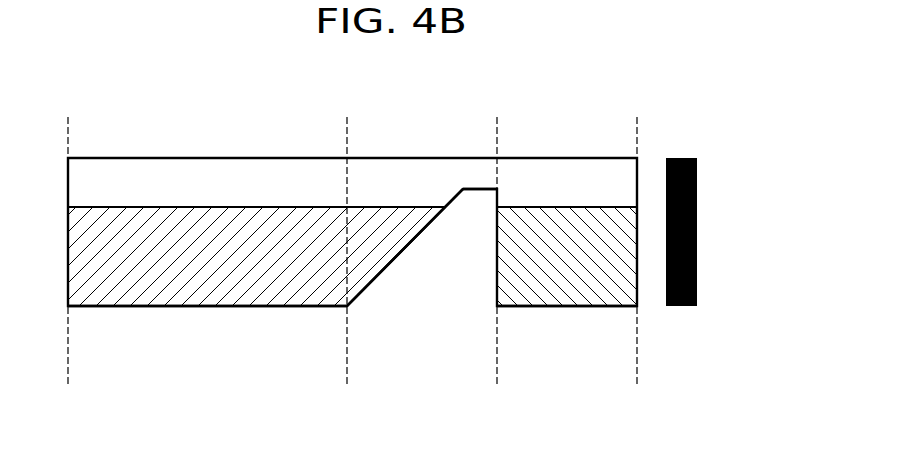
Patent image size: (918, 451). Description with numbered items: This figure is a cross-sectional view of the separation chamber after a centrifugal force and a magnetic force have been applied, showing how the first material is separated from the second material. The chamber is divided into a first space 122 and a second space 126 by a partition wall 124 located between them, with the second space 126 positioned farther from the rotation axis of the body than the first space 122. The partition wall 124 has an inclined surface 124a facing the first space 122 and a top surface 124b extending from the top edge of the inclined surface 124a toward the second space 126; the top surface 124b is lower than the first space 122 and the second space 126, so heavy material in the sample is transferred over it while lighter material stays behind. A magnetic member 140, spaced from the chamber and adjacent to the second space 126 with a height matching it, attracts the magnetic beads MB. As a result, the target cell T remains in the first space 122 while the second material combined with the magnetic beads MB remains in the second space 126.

The target cell T is at (229, 222).
The magnetic beads MB is at (570, 220).
The inclined surface 124a is at (400, 211).
The top surface 124b is at (481, 188).
The magnetic member 140 is at (698, 236).
The first space 122 is at (68, 379).
The partition wall 124 is at (347, 379).
The second space 126 is at (497, 379).